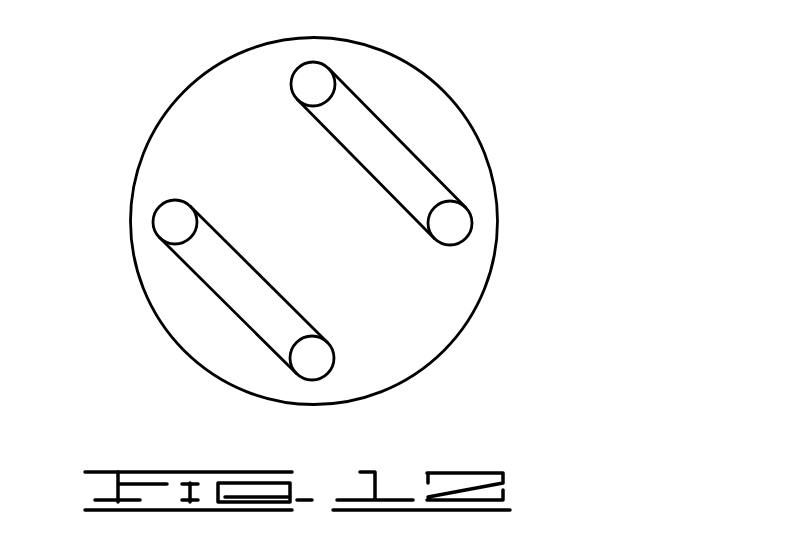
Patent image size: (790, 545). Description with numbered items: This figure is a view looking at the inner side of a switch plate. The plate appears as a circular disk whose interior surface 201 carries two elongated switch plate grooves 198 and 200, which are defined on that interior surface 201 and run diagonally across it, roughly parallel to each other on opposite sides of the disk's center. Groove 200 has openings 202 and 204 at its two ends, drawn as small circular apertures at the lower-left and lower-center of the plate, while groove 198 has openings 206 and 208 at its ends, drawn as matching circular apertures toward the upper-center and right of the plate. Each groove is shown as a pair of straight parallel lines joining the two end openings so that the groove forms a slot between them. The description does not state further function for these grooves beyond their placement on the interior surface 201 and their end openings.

The switch plate groove 198 is at (427, 163).
The switch plate groove 200 is at (245, 328).
The interior surface 201 is at (217, 113).
The opening 202 is at (178, 222).
The opening 204 is at (318, 369).
The opening 206 is at (320, 73).
The opening 208 is at (462, 222).